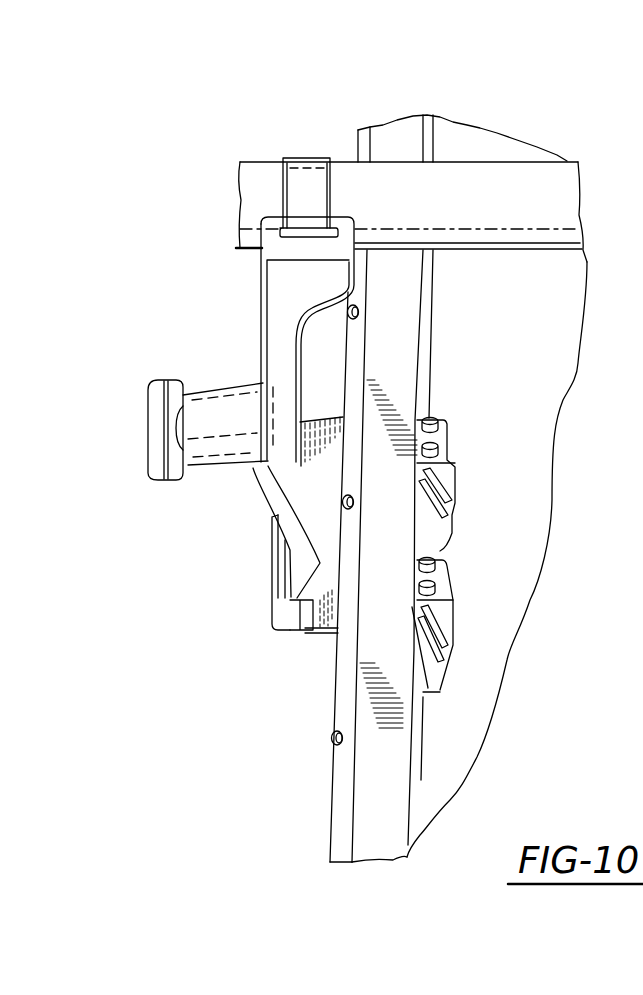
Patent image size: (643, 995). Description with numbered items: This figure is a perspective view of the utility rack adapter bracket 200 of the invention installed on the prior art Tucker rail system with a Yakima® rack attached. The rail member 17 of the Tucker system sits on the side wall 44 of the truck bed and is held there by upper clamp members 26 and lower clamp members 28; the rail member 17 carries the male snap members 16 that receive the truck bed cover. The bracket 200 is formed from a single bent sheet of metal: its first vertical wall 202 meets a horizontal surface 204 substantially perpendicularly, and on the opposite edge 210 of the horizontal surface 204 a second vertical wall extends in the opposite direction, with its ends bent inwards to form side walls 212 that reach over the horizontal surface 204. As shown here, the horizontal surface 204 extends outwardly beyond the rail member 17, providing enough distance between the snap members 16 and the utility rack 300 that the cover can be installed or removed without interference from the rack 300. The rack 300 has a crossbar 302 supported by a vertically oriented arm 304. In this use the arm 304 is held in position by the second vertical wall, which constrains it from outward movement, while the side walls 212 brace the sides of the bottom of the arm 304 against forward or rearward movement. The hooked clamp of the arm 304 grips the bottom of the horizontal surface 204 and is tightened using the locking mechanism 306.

The utility rack 300 is at (574, 142).
The crossbar 302 is at (265, 172).
The arm 304 is at (252, 468).
The locking mechanism 306 is at (217, 403).
The opposite edge 210 is at (286, 575).
The side walls 212 is at (292, 622).
The horizontal surface 204 is at (300, 634).
The bracket 200 is at (315, 658).
The snap members 16 is at (330, 738).
The side wall 44 is at (312, 826).
The rail member 17 is at (393, 808).
The upper clamp members 26 is at (447, 461).
The lower clamp members 28 is at (443, 533).
The first vertical wall 202 is at (430, 673).